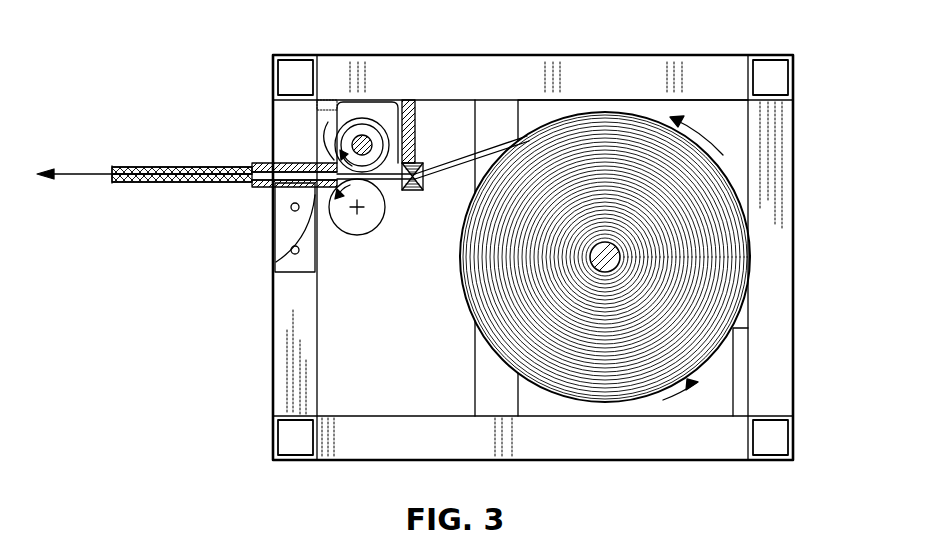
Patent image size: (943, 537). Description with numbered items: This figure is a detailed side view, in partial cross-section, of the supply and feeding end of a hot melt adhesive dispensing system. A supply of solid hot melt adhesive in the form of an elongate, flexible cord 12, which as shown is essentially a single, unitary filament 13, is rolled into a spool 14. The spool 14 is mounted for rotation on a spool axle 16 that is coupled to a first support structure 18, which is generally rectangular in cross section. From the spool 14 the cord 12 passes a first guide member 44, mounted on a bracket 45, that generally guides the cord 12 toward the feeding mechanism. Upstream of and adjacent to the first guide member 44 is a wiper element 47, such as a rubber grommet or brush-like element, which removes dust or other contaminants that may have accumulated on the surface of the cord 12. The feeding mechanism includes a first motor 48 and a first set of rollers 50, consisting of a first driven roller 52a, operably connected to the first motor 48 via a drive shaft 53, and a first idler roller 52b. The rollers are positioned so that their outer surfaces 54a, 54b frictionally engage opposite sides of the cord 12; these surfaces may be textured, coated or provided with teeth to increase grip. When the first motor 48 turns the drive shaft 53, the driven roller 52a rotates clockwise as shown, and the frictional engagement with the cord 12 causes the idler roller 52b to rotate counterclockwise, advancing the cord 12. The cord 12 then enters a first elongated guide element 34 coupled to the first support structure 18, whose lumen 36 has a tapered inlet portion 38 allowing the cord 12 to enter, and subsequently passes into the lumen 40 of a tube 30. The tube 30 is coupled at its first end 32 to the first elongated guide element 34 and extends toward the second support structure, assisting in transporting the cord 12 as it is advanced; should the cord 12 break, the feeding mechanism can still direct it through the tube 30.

The cord 12 is at (93, 178).
The filament 13 is at (93, 171).
The spool 14 is at (618, 108).
The spool axle 16 is at (622, 258).
The first support structure 18 is at (803, 73).
The tube 30 is at (135, 167).
The first end 32 is at (256, 163).
The first elongated guide element 34 is at (268, 188).
The lumen 36 is at (277, 218).
The tapered inlet portion 38 is at (290, 248).
The lumen 40 is at (160, 182).
The first guide member 44 is at (410, 192).
The bracket 45 is at (416, 120).
The wiper element 47 is at (424, 185).
The first motor 48 is at (327, 126).
The first set of rollers 50 is at (403, 91).
The first driven roller 52a is at (350, 125).
The first idler roller 52b is at (361, 222).
The drive shaft 53 is at (433, 153).
The outer surface 54a is at (380, 125).
The outer surface 54b is at (377, 228).